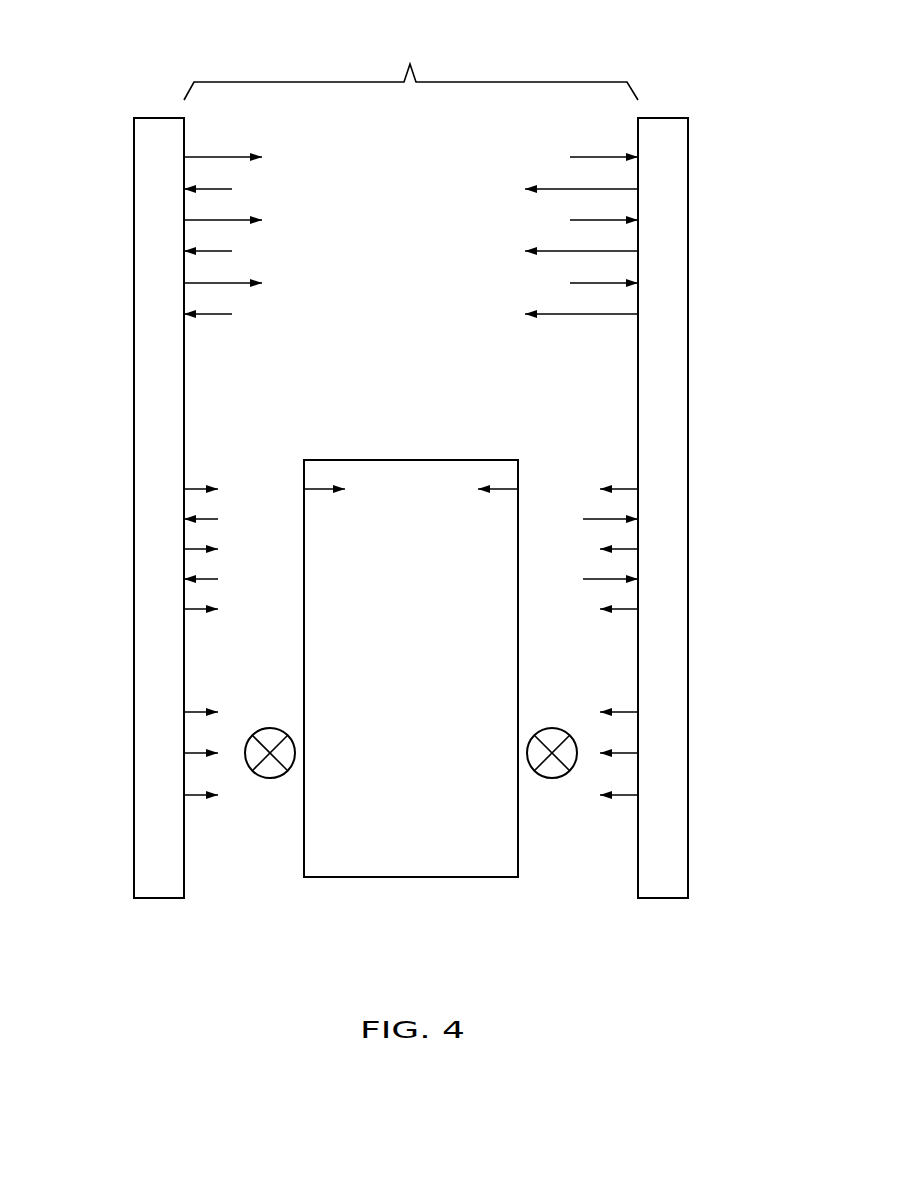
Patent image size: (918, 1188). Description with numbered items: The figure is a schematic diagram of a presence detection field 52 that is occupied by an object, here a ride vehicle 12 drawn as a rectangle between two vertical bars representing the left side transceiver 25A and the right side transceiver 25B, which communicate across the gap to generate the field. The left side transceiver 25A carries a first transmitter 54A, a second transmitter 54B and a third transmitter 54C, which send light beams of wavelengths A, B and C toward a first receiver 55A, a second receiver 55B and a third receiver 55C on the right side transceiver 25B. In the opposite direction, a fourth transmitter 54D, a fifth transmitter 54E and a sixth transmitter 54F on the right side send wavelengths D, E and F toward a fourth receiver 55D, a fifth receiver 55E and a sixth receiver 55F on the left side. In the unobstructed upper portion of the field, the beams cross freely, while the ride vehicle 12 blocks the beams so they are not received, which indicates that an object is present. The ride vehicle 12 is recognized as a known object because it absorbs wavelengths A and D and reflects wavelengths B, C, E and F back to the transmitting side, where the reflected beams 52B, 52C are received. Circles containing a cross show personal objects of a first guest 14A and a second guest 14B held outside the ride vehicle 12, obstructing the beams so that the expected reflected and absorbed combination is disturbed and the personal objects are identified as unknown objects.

The presence detection field 52 is at (128, 50).
The left side transceiver 25A is at (148, 447).
The right side transceiver 25B is at (680, 447).
The ride vehicle 12 is at (407, 460).
The first guest 14A is at (290, 786).
The second guest 14B is at (533, 786).
The reflected beam B 52B is at (262, 512).
The reflected beam C 52C is at (262, 572).
The first transmitter 54A is at (289, 155).
The second transmitter 54B is at (289, 218).
The third transmitter 54C is at (289, 281).
The fourth transmitter 54D is at (500, 186).
The fifth transmitter 54E is at (500, 248).
The sixth transmitter 54F is at (500, 311).
The first receiver 55A is at (547, 157).
The second receiver 55B is at (547, 220).
The third receiver 55C is at (547, 283).
The fourth receiver 55D is at (254, 190).
The fifth receiver 55E is at (254, 252).
The sixth receiver 55F is at (254, 315).